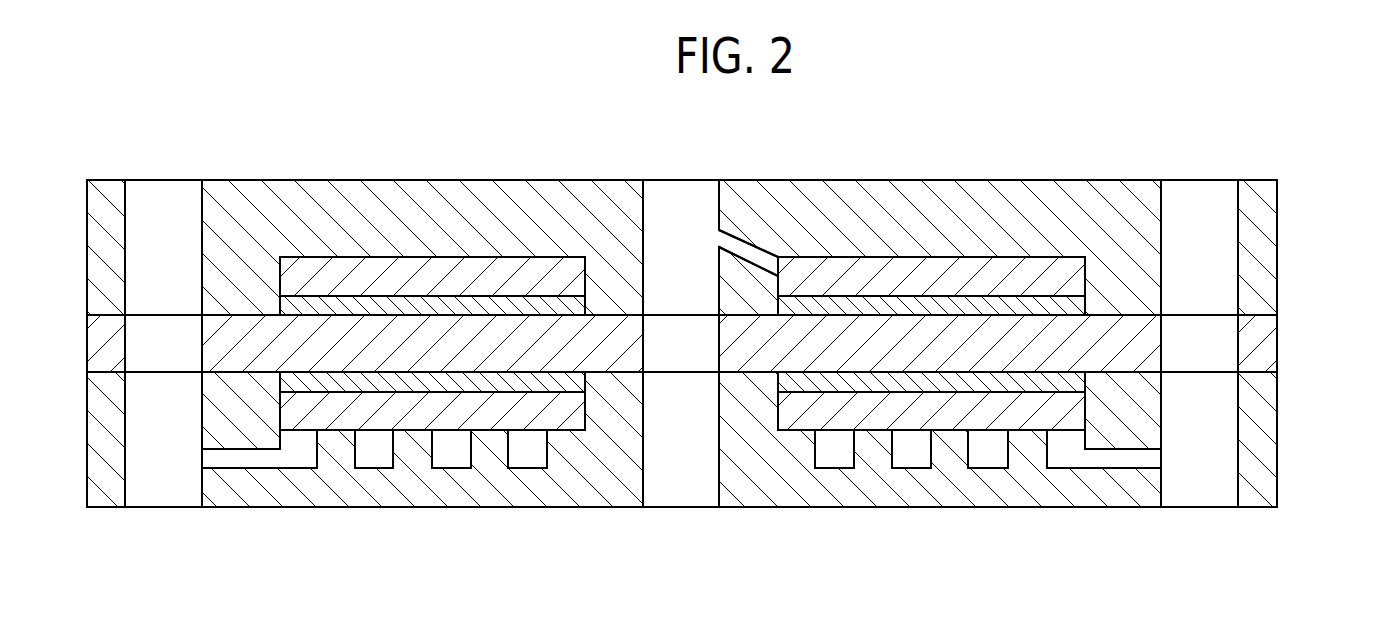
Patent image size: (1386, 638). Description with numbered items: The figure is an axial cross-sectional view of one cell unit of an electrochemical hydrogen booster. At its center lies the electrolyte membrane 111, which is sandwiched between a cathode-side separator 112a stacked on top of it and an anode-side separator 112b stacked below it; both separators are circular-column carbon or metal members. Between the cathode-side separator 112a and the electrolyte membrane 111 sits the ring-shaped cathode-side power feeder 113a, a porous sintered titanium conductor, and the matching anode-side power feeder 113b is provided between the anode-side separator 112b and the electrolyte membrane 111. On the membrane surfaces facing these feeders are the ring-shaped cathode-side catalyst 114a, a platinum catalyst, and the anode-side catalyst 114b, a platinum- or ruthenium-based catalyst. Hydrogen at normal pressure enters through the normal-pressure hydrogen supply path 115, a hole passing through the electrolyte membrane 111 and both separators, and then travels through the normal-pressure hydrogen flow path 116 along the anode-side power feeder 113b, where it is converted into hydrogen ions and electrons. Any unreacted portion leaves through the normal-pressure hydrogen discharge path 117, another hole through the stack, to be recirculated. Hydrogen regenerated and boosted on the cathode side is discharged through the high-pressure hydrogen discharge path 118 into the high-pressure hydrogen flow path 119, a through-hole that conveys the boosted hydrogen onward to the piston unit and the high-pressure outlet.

The electrolyte membrane 111 is at (1257, 343).
The cathode-side separator 112a is at (1257, 247).
The anode-side separator 112b is at (1257, 438).
The cathode-side power feeder 113a is at (877, 275).
The anode-side power feeder 113b is at (877, 418).
The cathode-side catalyst 114a is at (1031, 299).
The anode-side catalyst 114b is at (1027, 383).
The normal-pressure hydrogen supply path 115 is at (1200, 487).
The normal-pressure hydrogen flow path 116 is at (837, 458).
The normal-pressure hydrogen discharge path 117 is at (163, 487).
The high-pressure hydrogen discharge path 118 is at (748, 252).
The high-pressure hydrogen flow path 119 is at (680, 487).